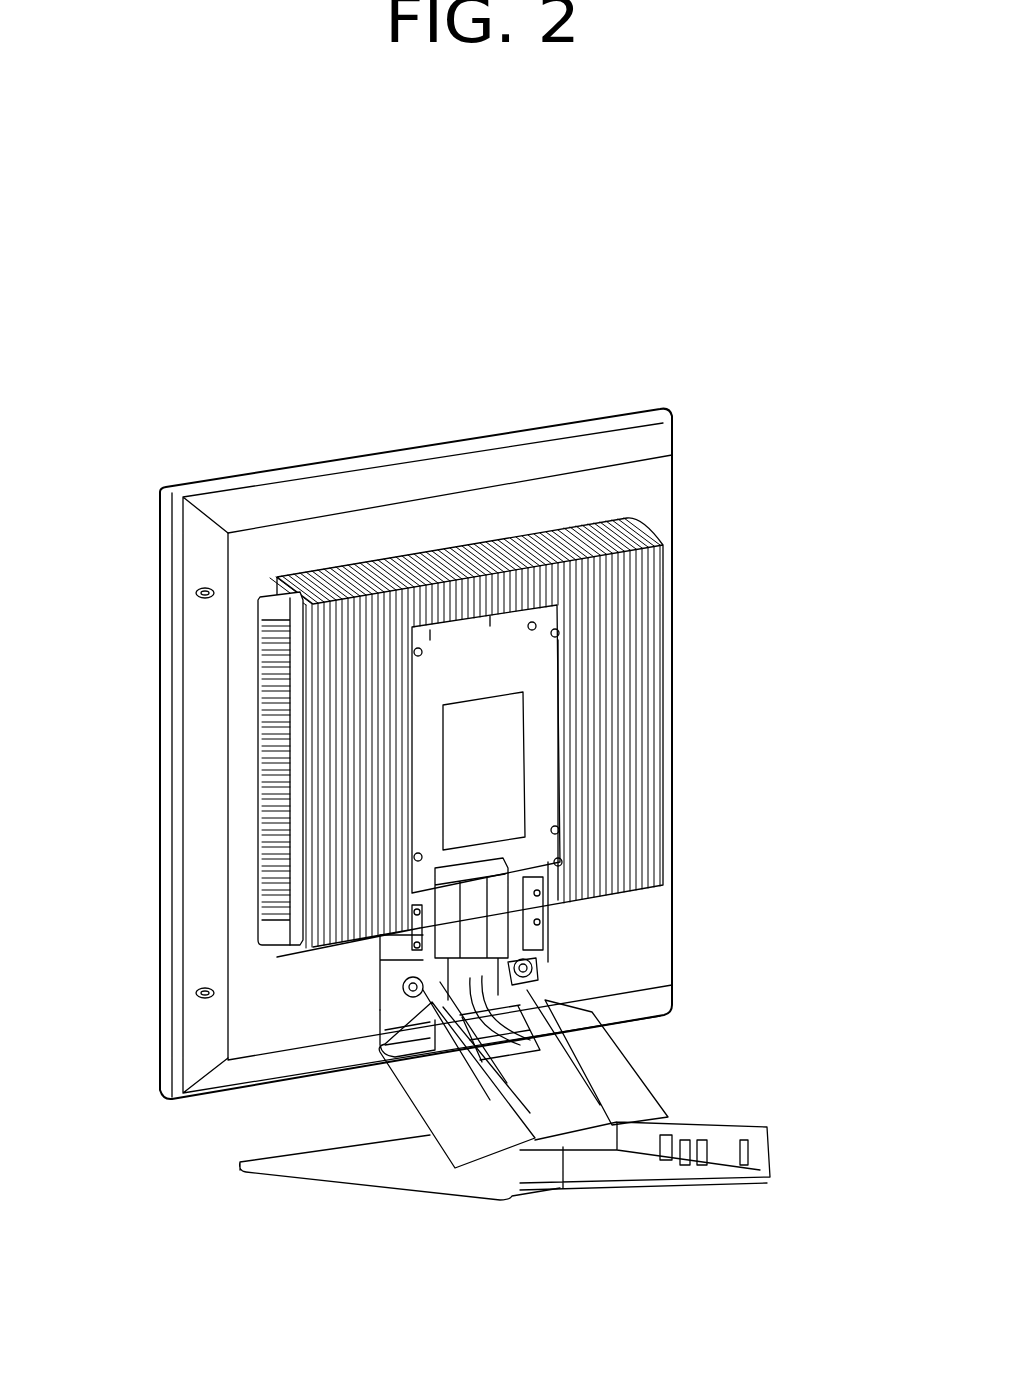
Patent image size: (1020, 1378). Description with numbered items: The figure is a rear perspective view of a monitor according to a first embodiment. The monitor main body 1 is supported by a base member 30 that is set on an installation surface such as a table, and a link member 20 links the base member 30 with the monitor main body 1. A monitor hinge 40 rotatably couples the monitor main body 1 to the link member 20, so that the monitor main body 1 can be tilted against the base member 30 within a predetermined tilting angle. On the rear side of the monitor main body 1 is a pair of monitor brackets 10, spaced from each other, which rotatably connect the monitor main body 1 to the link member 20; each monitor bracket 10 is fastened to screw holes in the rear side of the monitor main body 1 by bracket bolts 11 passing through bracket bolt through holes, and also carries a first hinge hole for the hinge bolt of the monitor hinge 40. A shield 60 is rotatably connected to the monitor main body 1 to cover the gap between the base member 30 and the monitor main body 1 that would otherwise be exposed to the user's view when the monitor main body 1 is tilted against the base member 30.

The monitor main body 1 is at (152, 754).
The monitor bracket 10 is at (470, 880).
The bracket bolt 11 is at (545, 915).
The link member 20 is at (598, 1088).
The base member 30 is at (561, 1202).
The monitor hinge 40 is at (397, 984).
The shield 60 is at (386, 1033).